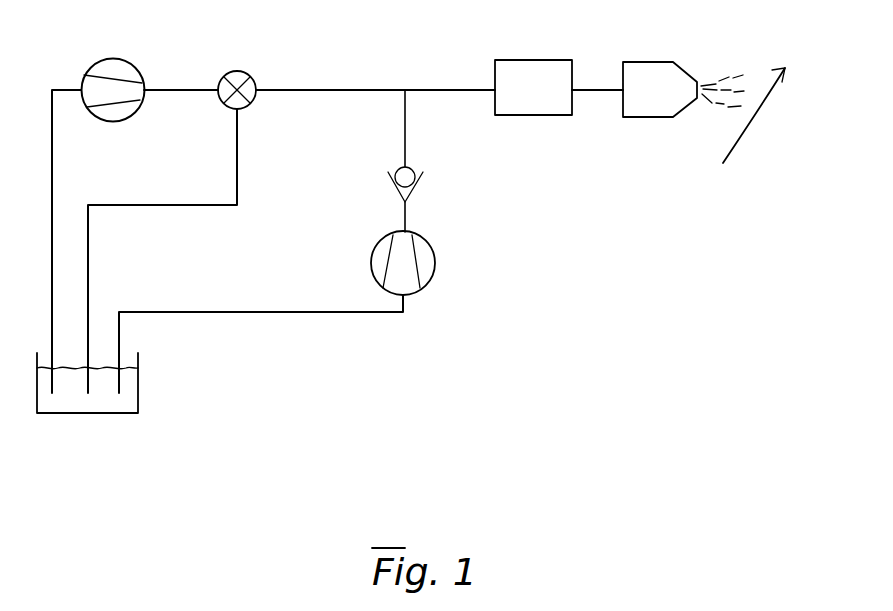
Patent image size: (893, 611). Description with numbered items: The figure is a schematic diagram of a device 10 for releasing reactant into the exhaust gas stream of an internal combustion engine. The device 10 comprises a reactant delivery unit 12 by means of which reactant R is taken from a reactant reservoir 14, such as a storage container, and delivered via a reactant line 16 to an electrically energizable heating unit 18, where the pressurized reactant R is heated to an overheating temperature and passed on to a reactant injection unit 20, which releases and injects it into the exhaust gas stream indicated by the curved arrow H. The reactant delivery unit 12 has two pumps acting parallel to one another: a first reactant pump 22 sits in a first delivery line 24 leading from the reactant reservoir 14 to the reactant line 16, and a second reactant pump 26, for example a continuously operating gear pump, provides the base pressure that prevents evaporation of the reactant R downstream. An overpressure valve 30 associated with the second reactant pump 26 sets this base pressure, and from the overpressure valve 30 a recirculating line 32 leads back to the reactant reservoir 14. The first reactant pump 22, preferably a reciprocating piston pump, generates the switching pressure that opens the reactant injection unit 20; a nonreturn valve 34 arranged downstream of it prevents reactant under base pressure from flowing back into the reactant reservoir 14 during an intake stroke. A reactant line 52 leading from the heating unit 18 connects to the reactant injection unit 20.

The device for releasing reactant 10 is at (583, 327).
The reactant delivery unit 12 is at (312, 340).
The reactant reservoir 14 is at (142, 387).
The reactant line 16 is at (432, 83).
The heating unit 18 is at (535, 58).
The reactant injection unit 20 is at (650, 60).
The first reactant pump 22 is at (435, 263).
The first delivery line 24 is at (54, 143).
The second reactant pump 26 is at (124, 58).
The overpressure valve 30 is at (239, 72).
The recirculating line 32 is at (187, 207).
The nonreturn valve 34 is at (420, 185).
The reactant line 52 is at (595, 93).
The reactant R is at (100, 397).
The hand / surface to be cleaned H is at (735, 133).